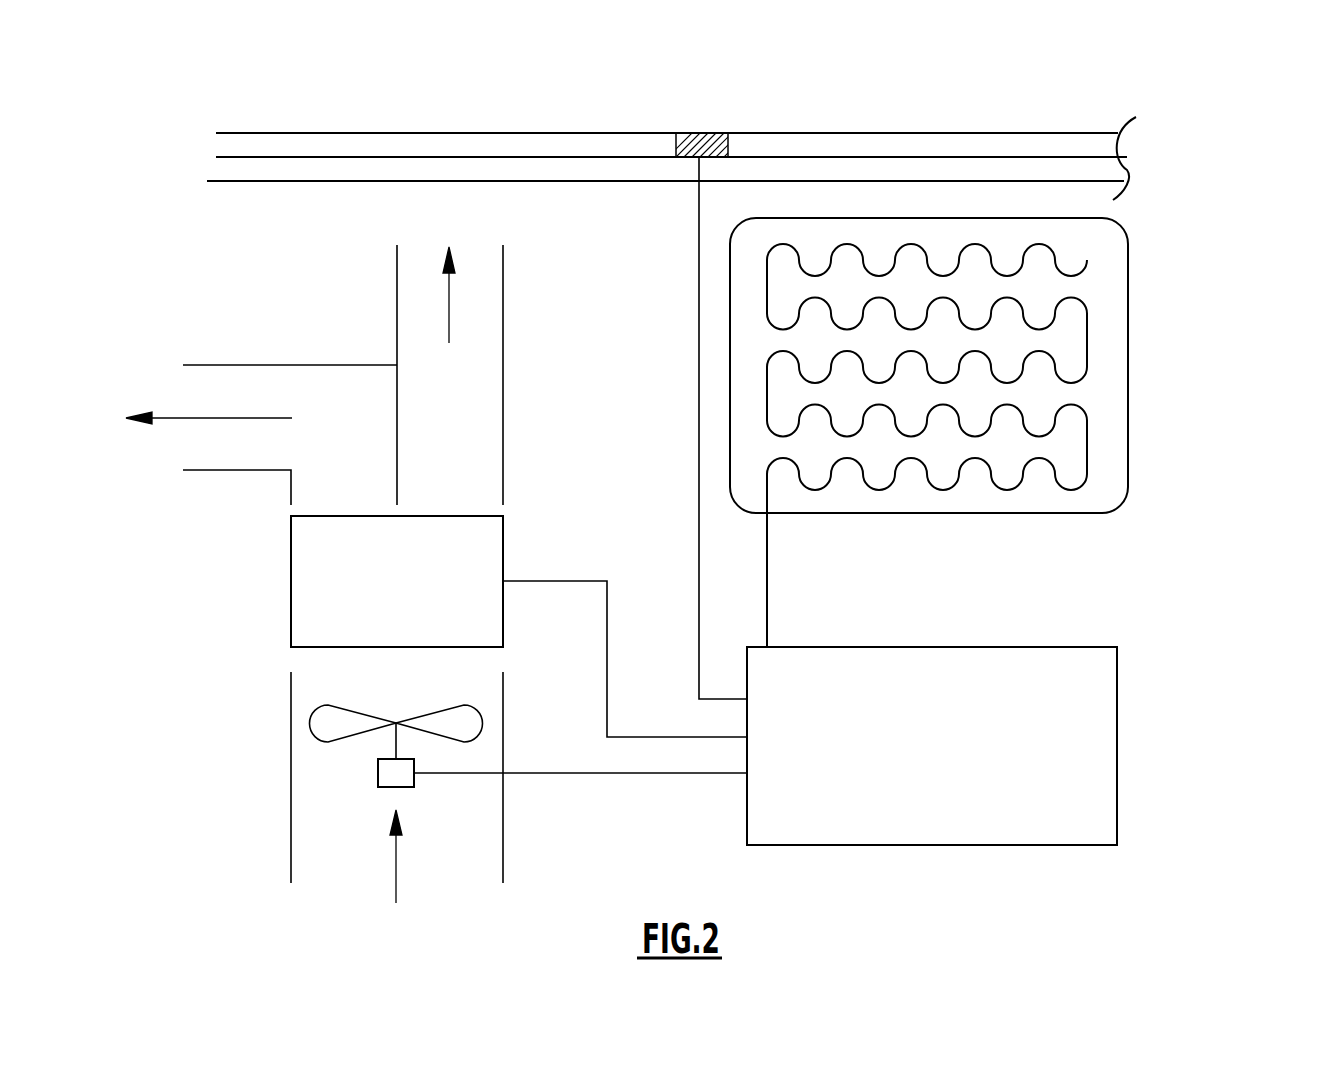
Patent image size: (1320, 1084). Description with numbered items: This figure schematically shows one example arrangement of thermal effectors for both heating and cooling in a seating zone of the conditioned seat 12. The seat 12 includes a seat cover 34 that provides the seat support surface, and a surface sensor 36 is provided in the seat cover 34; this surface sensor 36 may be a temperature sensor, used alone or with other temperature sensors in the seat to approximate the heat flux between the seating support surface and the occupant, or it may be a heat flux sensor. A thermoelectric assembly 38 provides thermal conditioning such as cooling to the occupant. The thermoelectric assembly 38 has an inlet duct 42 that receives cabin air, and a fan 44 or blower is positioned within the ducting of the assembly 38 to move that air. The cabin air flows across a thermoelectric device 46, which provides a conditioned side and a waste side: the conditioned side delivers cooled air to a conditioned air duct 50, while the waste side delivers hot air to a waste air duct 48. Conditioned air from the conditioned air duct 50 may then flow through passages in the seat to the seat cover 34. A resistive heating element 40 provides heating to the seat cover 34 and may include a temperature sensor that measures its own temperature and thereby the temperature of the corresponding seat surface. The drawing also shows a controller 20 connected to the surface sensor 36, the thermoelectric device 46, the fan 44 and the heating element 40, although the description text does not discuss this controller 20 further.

The seat 12 is at (1246, 59).
The controller 20 is at (1117, 676).
The seat cover 34 is at (945, 133).
The surface sensor 36 is at (707, 133).
The thermoelectric assembly 38 is at (165, 645).
The resistive heating element 40 is at (1106, 490).
The inlet duct 42 is at (292, 857).
The fan 44 is at (356, 740).
The thermoelectric device 46 is at (380, 594).
The waste air duct 48 is at (195, 365).
The conditioned air duct 50 is at (502, 252).